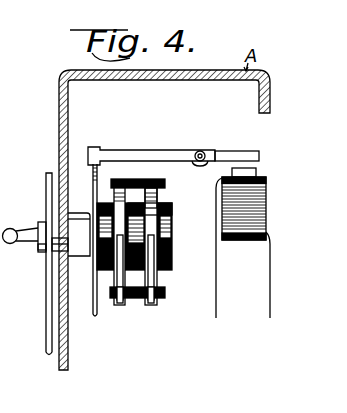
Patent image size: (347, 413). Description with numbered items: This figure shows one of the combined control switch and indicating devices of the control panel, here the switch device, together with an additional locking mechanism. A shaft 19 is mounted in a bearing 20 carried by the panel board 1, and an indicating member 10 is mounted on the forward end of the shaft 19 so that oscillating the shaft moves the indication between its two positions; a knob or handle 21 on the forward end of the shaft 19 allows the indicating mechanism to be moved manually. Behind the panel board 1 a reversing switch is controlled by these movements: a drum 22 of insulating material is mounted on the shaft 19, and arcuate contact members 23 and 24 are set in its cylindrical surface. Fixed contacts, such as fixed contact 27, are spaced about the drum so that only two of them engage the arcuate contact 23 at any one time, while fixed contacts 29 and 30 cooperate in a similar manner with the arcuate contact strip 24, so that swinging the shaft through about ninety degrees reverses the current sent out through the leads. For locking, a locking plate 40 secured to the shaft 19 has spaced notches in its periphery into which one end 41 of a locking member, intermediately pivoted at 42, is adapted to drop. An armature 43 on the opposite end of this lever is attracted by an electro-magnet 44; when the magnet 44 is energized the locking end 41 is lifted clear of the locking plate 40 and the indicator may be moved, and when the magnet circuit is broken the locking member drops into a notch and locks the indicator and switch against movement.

The panel board 1 is at (58, 129).
The indicating member 10 is at (45, 286).
The shaft 19 is at (40, 252).
The bearing 20 is at (82, 257).
The knob or handle 21 is at (22, 231).
The drum 22 is at (168, 268).
The arcuate contact member 23 is at (113, 197).
The arcuate contact member 24 is at (160, 204).
The fixed contact member 27 is at (105, 285).
The fixed contact 29 is at (151, 190).
The fixed contact 30 is at (166, 289).
The locking plate 40 is at (94, 318).
The locking member end 41 is at (118, 150).
The pivot 42 is at (201, 150).
The armature 43 is at (236, 152).
The electro-magnet 44 is at (222, 240).